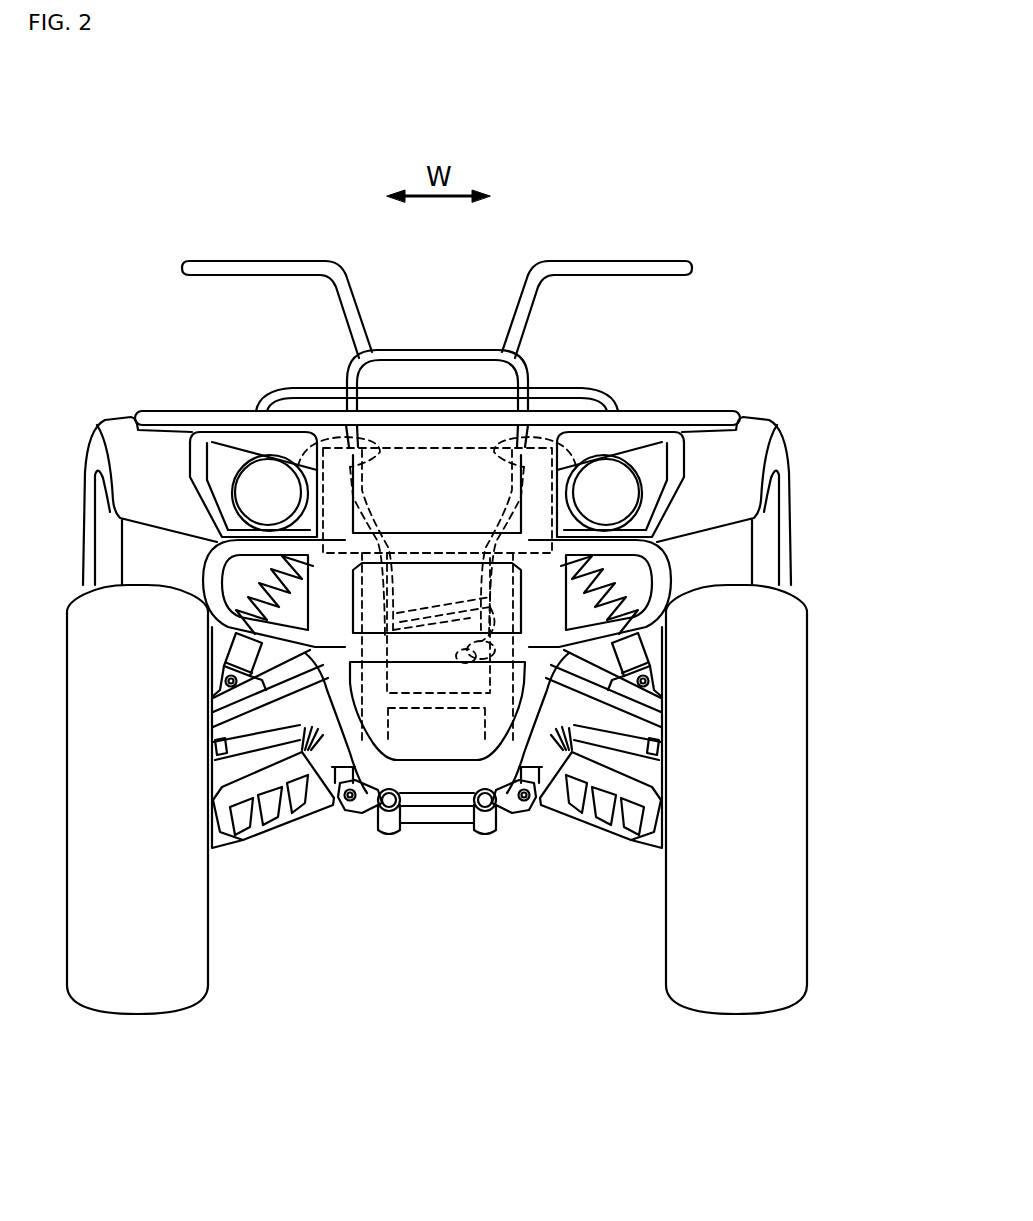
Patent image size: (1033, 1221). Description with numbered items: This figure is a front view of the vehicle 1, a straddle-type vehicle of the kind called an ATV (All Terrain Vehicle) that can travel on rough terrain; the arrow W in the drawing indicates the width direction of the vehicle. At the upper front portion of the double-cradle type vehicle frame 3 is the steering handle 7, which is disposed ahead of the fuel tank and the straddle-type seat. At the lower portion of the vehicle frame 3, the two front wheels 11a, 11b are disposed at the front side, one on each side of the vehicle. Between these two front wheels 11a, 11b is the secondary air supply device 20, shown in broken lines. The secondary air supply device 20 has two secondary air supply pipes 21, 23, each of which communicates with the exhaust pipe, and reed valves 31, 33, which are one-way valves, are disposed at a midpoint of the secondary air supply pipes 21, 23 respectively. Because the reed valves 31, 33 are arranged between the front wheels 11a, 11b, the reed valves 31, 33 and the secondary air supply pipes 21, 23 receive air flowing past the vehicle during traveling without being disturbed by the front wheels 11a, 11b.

The vehicle 1 is at (663, 170).
The steering handle 7 is at (243, 262).
The front wheel 11a is at (122, 1015).
The front wheel 11b is at (733, 1015).
The secondary air supply device 20 is at (545, 434).
The reed valve 31 is at (381, 455).
The reed valve 33 is at (503, 457).
The secondary air supply pipe 21 is at (380, 520).
The secondary air supply pipe 23 is at (520, 532).
The vehicle frame 3 is at (386, 735).